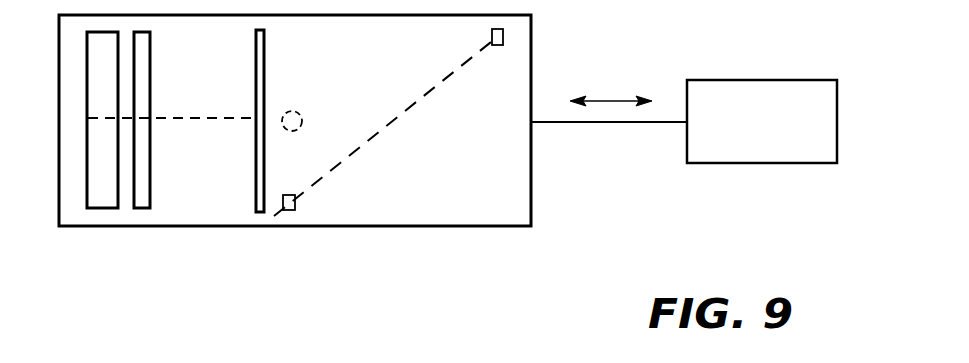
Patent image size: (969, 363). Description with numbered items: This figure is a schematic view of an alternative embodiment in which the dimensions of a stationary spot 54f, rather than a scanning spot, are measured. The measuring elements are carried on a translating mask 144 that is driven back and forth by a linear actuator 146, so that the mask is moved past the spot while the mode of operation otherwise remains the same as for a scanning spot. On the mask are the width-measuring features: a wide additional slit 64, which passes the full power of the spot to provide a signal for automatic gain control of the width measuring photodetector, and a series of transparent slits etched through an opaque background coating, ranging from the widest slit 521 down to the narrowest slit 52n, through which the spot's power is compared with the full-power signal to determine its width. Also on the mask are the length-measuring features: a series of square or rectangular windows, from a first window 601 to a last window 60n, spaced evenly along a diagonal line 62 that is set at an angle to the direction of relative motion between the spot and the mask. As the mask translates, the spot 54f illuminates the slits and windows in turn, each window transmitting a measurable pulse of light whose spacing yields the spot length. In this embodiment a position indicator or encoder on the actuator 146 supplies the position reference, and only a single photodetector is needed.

The translating mask 144 is at (532, 217).
The additional slit 64 is at (103, 200).
The slit 521 is at (152, 210).
The slit 52n is at (264, 212).
The stationary spot 54f is at (290, 109).
The diagonal line 62 is at (383, 126).
The window 601 is at (296, 207).
The window 60n is at (503, 40).
The linear actuator 146 is at (785, 164).